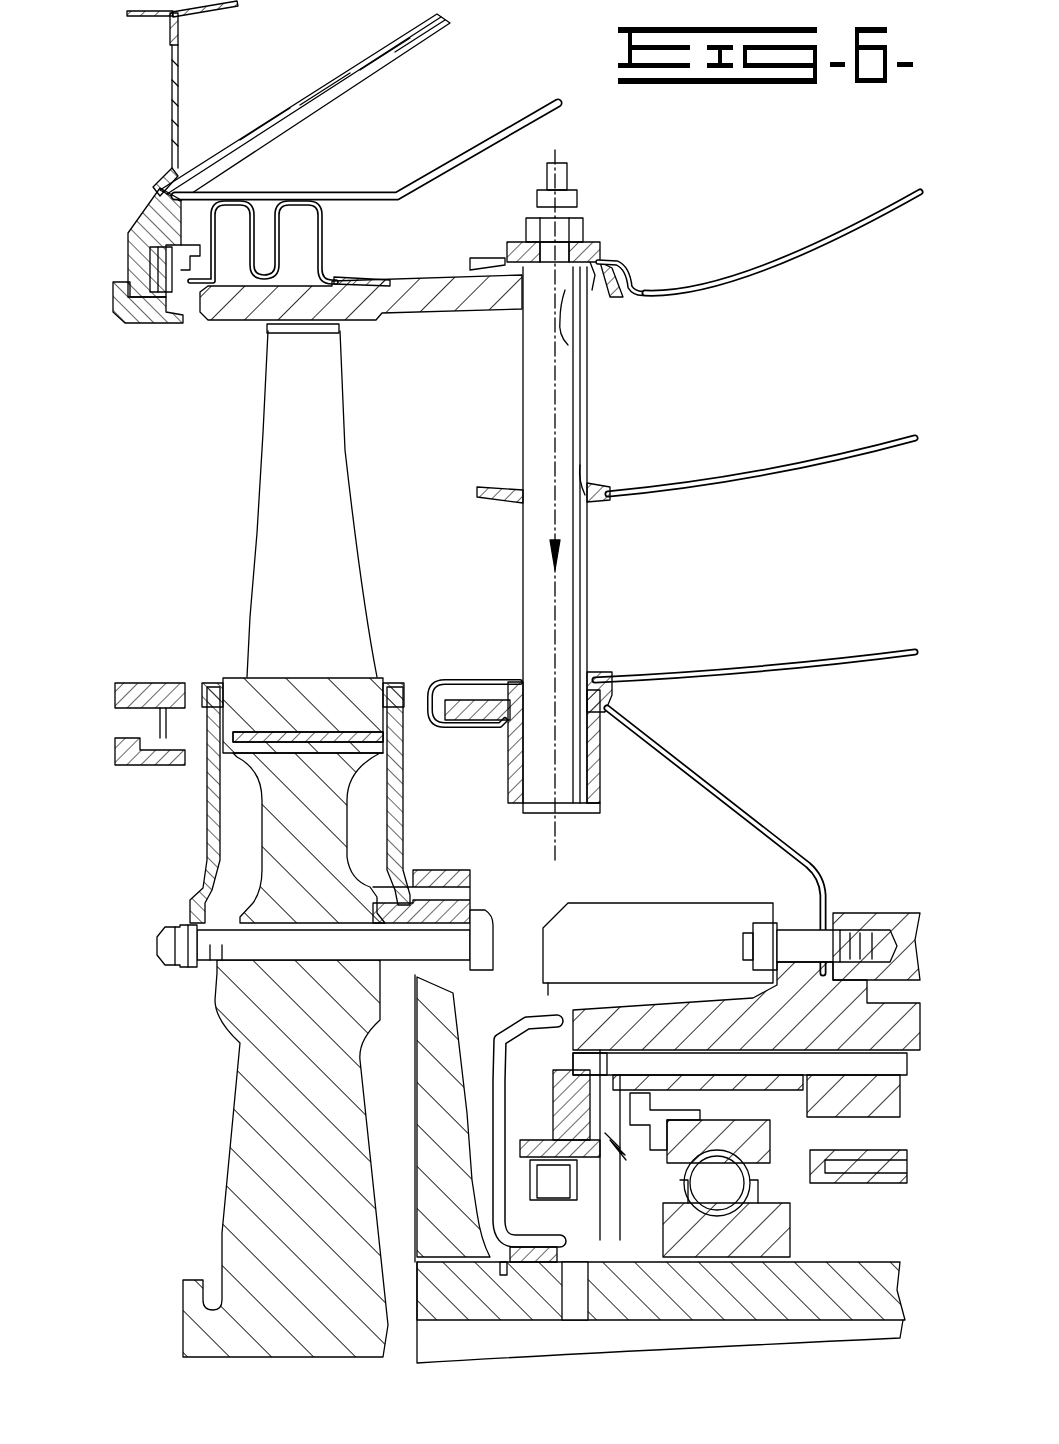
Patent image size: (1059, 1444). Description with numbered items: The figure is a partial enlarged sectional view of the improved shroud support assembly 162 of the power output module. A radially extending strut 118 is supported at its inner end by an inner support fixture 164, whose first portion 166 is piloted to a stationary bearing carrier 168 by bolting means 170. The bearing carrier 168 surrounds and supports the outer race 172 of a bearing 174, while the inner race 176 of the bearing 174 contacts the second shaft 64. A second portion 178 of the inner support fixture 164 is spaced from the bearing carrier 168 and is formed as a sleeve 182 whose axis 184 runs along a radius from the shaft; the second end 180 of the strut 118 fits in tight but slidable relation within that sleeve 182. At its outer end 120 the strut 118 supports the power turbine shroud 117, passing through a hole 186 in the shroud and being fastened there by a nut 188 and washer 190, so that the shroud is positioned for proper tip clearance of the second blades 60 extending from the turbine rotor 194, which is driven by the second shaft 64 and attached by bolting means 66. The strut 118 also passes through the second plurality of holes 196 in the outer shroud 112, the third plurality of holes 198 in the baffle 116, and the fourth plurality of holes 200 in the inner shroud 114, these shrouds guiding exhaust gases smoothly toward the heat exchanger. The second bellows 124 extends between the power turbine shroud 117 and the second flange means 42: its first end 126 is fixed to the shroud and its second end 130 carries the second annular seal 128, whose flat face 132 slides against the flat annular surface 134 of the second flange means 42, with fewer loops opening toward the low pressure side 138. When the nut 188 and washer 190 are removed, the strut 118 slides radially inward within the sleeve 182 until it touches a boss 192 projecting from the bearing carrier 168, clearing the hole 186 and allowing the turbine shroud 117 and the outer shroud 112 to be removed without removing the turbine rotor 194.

The second flange means 42 is at (248, 138).
The second blades 60 is at (335, 535).
The second shaft 64 is at (680, 1322).
The bolting means 66 is at (155, 945).
The outer shroud 112 is at (738, 272).
The inner shroud 114 is at (700, 672).
The baffle 116 is at (718, 472).
The power turbine shroud 117 is at (446, 292).
The struts 118 is at (557, 418).
The outer end 120 is at (585, 275).
The second bellows 124 is at (300, 228).
The first end 126 is at (390, 287).
The second annular seal 128 is at (204, 296).
The second end 130 is at (284, 282).
The flat face 132 is at (160, 245).
The flat annular surface 134 is at (176, 225).
The low pressure side 138 is at (262, 255).
The shroud support assembly 162 is at (705, 153).
The inner support fixture 164 is at (755, 808).
The first portion 166 is at (830, 913).
The bearing carrier 168 is at (824, 1036).
The bolting means 170 is at (768, 935).
The outer race 172 is at (760, 1150).
The bearing 174 is at (533, 1025).
The inner race 176 is at (790, 1235).
The second portion 178 is at (615, 700).
The second end 180 is at (565, 765).
The sleeves 182 is at (508, 760).
The axis 184 is at (535, 825).
The holes 186 is at (575, 330).
The nuts 188 is at (515, 245).
The washers 190 is at (512, 240).
The bosses 192 is at (590, 925).
The turbine rotor 194 is at (315, 1182).
The second plurality of holes 196 is at (565, 228).
The third plurality of holes 198 is at (585, 478).
The fourth plurality of holes 200 is at (520, 690).